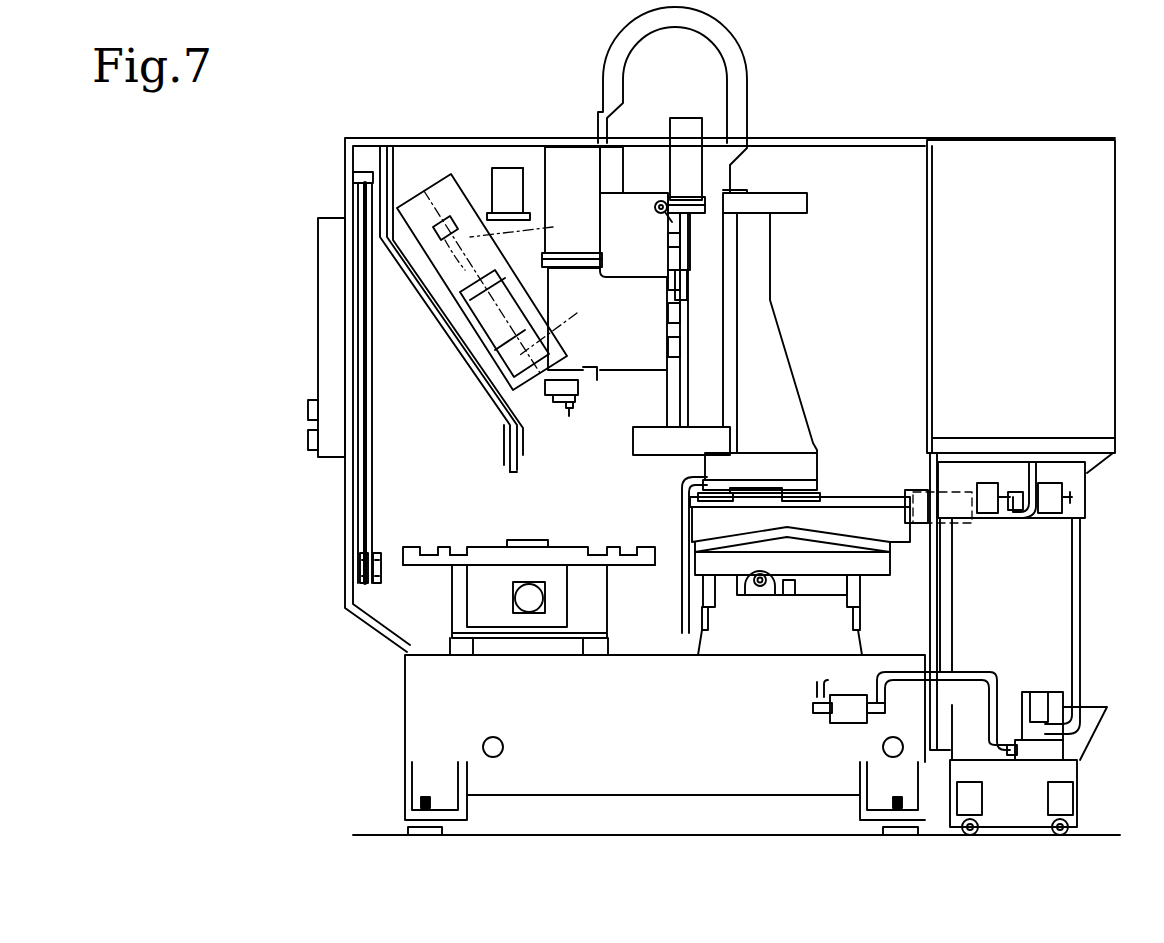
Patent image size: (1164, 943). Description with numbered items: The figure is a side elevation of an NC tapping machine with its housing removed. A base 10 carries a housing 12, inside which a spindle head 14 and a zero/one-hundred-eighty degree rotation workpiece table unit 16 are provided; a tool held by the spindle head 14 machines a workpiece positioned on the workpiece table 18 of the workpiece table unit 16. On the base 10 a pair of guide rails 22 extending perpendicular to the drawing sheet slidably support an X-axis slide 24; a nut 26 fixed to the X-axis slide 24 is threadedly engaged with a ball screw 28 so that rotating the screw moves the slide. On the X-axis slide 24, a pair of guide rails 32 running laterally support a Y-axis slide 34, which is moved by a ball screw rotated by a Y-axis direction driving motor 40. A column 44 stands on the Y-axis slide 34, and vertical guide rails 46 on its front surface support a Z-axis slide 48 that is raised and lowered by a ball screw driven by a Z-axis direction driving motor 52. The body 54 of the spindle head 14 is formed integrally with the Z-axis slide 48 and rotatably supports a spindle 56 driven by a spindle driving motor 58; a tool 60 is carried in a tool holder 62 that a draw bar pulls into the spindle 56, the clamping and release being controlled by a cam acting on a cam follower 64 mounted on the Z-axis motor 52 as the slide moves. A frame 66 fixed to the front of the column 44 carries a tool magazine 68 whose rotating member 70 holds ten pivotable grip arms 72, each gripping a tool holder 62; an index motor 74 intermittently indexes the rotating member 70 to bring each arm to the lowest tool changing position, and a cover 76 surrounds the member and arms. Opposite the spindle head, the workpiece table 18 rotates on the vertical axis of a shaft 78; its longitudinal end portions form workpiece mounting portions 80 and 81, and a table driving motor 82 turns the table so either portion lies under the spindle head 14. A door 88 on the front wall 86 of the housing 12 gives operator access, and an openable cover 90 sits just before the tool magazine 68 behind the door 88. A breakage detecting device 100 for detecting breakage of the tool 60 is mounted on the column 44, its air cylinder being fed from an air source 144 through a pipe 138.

The base 10 is at (420, 715).
The housing 12 is at (410, 140).
The spindle head 14 is at (612, 245).
The workpiece table unit 16 is at (420, 510).
The workpiece table 18 is at (437, 565).
The guide rails 22 is at (707, 595).
The X-axis slide 24 is at (707, 523).
The nut 26 is at (787, 577).
The ball screw 28 is at (767, 582).
The guide rails 32 is at (863, 502).
The Y-axis slide 34 is at (807, 468).
The Y-axis direction driving motor 40 is at (917, 487).
The column 44 is at (767, 358).
The guide rails 46 is at (690, 407).
The Z-axis slide 48 is at (642, 283).
The Z-axis direction driving motor 52 is at (687, 127).
The body 54 is at (585, 370).
The spindle 56 is at (587, 403).
The spindle driving motor 58 is at (575, 160).
The tool 60 is at (480, 190).
The tool holder 62 is at (558, 413).
The cam follower 64 is at (658, 202).
The frame 66 is at (533, 213).
The tool magazine 68 is at (470, 138).
The rotating member 70 is at (566, 319).
The grip arms 72 is at (413, 230).
The index motor 74 is at (510, 168).
The cover 76 is at (443, 185).
The shaft 78 is at (527, 543).
The workpiece mounting portion 80 is at (602, 547).
The workpiece mounting portion 81 is at (458, 547).
The table driving motor 82 is at (537, 612).
The front wall 86 is at (358, 582).
The door 88 is at (358, 503).
The cover 90 is at (527, 453).
The breakage detecting device 100 is at (612, 465).
The pipe 138 is at (1035, 472).
The air source 144 is at (987, 507).